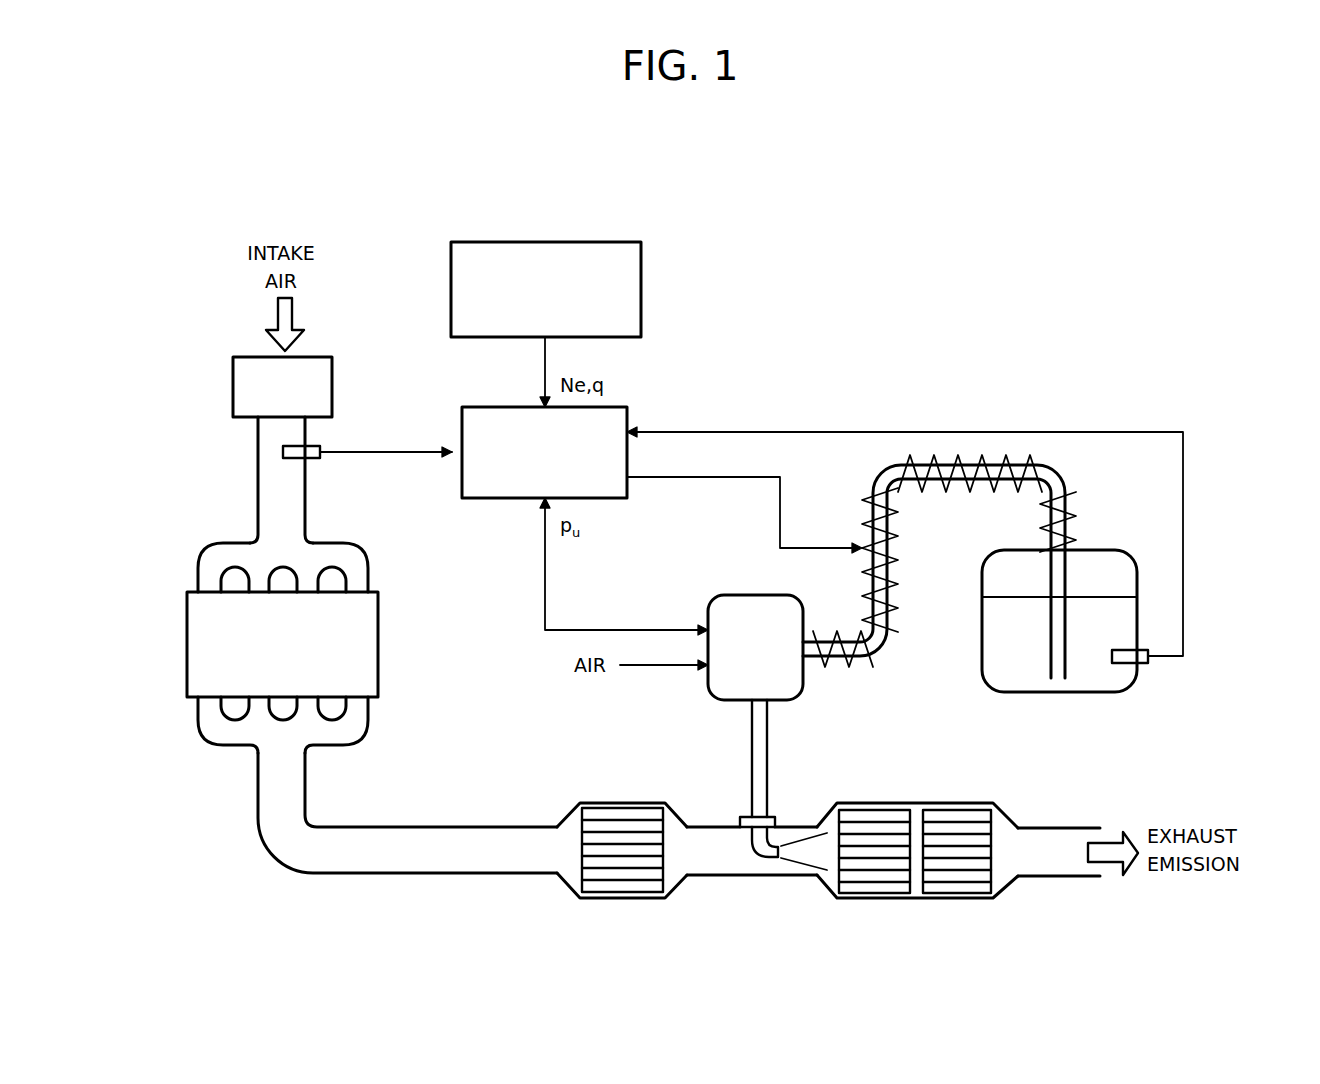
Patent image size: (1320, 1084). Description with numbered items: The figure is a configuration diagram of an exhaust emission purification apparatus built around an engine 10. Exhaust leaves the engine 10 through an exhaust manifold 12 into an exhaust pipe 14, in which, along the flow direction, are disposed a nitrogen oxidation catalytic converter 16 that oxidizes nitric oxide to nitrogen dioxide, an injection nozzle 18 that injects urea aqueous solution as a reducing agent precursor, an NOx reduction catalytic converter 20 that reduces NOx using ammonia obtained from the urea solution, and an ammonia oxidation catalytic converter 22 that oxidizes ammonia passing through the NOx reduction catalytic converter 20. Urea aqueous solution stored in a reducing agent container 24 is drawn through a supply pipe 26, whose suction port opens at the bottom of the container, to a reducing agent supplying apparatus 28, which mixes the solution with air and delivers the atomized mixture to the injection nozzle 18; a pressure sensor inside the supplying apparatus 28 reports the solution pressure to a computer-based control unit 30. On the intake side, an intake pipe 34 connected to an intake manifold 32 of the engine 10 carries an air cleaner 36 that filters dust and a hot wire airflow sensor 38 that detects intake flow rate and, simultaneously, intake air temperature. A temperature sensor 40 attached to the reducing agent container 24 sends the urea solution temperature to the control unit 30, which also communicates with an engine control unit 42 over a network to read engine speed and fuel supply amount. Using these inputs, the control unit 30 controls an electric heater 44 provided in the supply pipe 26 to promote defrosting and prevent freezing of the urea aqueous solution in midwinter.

The engine 10 is at (187, 633).
The exhaust manifold 12 is at (368, 720).
The exhaust pipe 14 is at (415, 827).
The nitrogen oxidation catalytic converter 16 is at (625, 828).
The injection nozzle 18 is at (760, 855).
The NOx reduction catalytic converter 20 is at (873, 828).
The ammonia oxidation catalytic converter 22 is at (958, 828).
The reducing agent container 24 is at (1115, 550).
The supply pipe 26 is at (872, 475).
The reducing agent supplying apparatus 28 is at (735, 595).
The control unit 30 is at (510, 407).
The intake manifold 32 is at (368, 567).
The intake pipe 34 is at (258, 505).
The air cleaner 36 is at (258, 357).
The hot wire airflow sensor 38 is at (301, 455).
The temperature sensor 40 is at (1125, 660).
The engine control unit 42 is at (512, 242).
The electric heater 44 is at (888, 560).